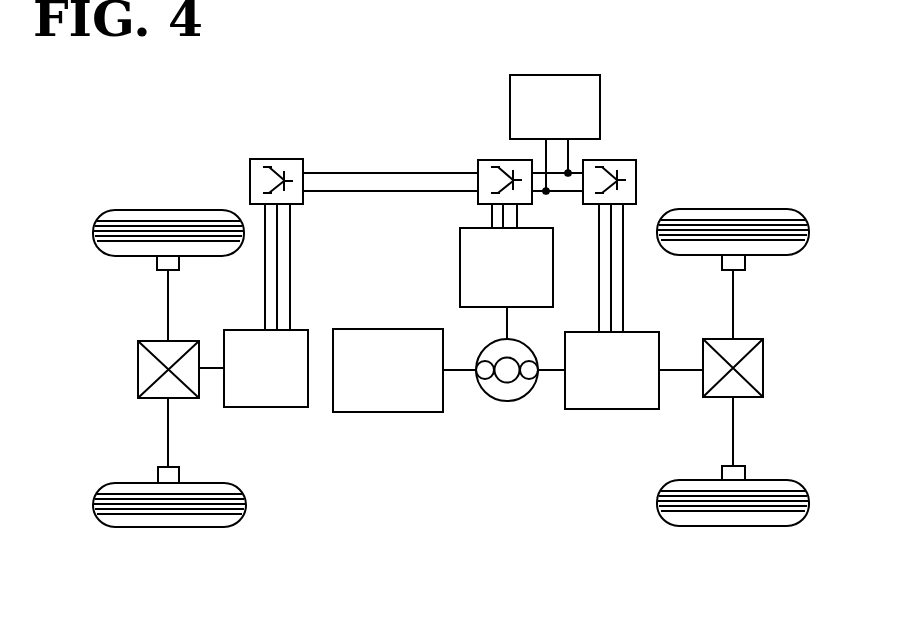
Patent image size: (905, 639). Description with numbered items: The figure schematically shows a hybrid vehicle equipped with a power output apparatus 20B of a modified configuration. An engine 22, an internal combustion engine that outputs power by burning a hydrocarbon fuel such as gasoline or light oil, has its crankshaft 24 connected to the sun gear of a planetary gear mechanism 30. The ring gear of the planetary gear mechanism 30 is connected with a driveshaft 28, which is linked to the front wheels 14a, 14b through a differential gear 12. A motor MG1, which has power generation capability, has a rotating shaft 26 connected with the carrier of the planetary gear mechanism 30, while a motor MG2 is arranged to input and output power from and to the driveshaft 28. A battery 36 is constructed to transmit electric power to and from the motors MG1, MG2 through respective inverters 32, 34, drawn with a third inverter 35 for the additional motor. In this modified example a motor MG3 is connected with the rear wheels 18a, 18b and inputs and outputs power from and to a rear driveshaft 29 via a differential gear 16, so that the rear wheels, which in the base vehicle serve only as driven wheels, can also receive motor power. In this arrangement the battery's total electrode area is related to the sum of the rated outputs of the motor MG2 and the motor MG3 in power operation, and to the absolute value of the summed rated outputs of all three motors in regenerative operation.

The power output apparatus 20B is at (389, 116).
The battery 36 is at (510, 107).
The inverter 34 is at (583, 197).
The inverter 35 is at (278, 158).
The inverter 32 is at (490, 160).
The motor MG1 is at (460, 285).
The motor MG2 is at (613, 410).
The motor MG3 is at (272, 408).
The rotating shaft 26 is at (506, 326).
The engine 22 is at (387, 412).
The crankshaft 24 is at (459, 373).
The planetary gear mechanism 30 is at (507, 402).
The driveshaft 28 is at (680, 372).
The rear driveshaft 29 is at (213, 370).
The differential gear 12 is at (763, 360).
The differential gear 16 is at (138, 360).
The front wheel 14a is at (733, 209).
The front wheel 14b is at (733, 527).
The rear wheel 18a is at (168, 209).
The rear wheel 18b is at (168, 527).